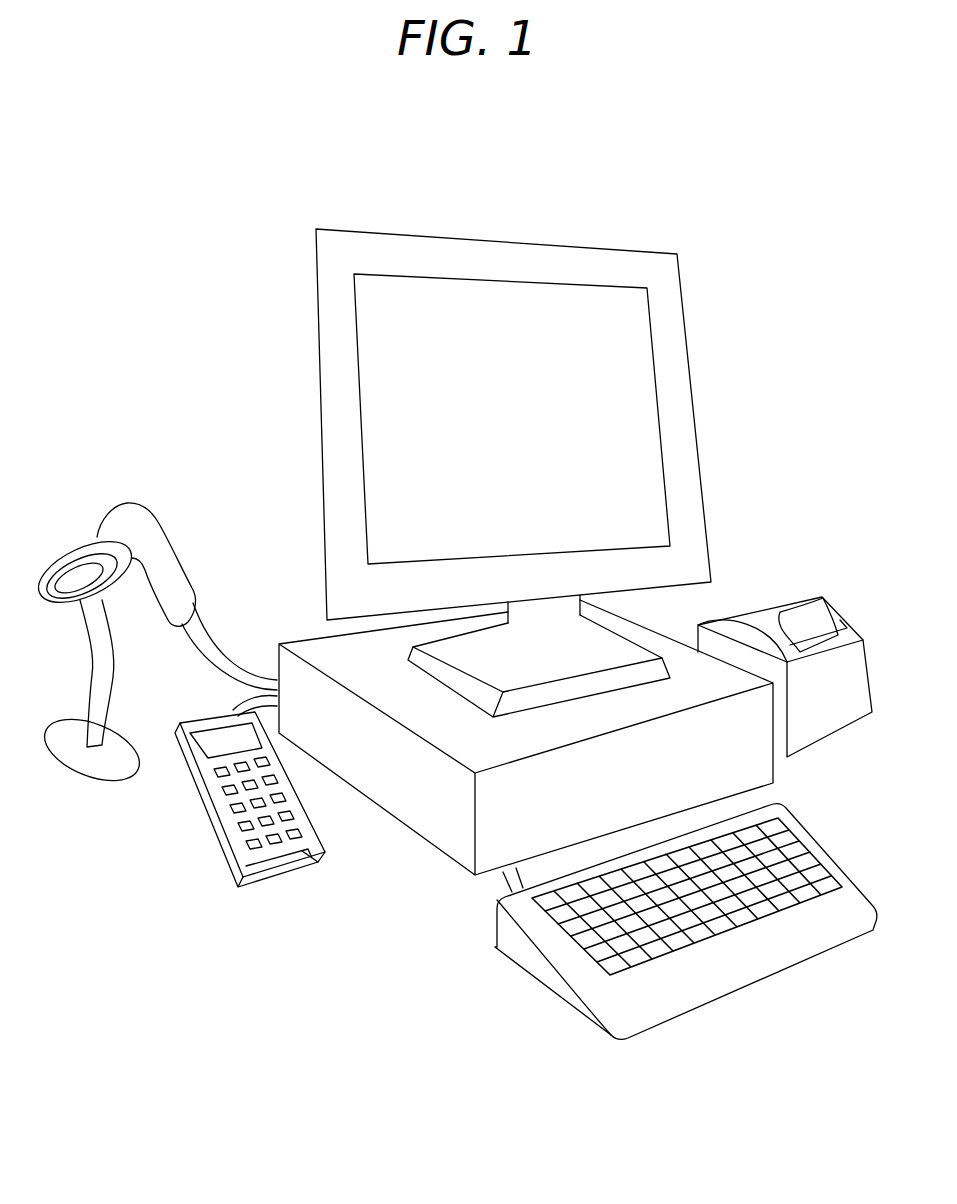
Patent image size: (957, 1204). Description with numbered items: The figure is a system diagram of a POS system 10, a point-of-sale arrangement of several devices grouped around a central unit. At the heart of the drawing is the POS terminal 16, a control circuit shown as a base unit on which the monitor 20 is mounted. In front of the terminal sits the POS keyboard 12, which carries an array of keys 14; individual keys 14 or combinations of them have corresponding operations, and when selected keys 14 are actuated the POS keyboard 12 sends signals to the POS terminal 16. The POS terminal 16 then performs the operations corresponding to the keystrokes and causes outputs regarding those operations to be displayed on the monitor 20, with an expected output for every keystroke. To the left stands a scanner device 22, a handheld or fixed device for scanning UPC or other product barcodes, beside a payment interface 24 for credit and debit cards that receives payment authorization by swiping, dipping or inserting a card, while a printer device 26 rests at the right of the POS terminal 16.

The POS system 10 is at (740, 257).
The POS keyboard 12 is at (662, 922).
The keys 14 is at (790, 843).
The POS terminal 16 is at (312, 652).
The monitor 20 is at (693, 402).
The scanner device 22 is at (145, 505).
The payment interface 24 is at (312, 847).
The printer device 26 is at (757, 618).